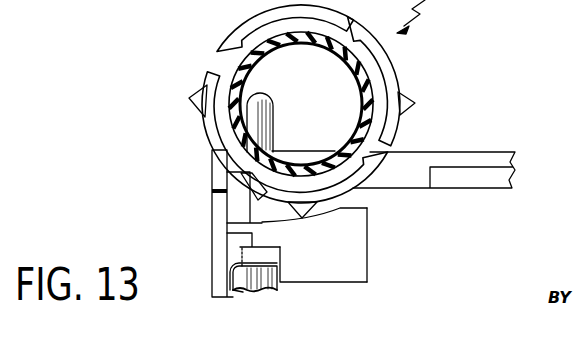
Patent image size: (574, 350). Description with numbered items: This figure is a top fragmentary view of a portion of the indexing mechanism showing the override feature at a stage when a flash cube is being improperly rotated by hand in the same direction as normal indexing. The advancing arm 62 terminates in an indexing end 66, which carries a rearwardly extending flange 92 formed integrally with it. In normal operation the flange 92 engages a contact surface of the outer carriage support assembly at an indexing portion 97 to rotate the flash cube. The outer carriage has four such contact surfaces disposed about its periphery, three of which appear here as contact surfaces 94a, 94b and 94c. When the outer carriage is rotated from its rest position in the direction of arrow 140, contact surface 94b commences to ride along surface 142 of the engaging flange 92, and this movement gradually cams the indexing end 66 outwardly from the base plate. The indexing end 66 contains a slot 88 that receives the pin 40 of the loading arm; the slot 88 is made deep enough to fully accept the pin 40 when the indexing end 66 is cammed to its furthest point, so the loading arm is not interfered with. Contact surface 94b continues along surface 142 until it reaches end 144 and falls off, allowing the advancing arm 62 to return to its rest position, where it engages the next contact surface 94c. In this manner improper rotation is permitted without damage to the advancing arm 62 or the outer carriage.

The arrow 140 is at (167, 103).
The contact surface 94a is at (412, 101).
The contact surface 94b is at (288, 208).
The contact surface 94c is at (199, 108).
The surface 142 is at (227, 224).
The end 144 is at (361, 218).
The flange 92 is at (347, 242).
The indexing portion 97 is at (368, 268).
The indexing end 66 is at (367, 291).
The advancing arm 62 is at (405, 180).
The pin 40 is at (258, 292).
The slot 88 is at (243, 293).